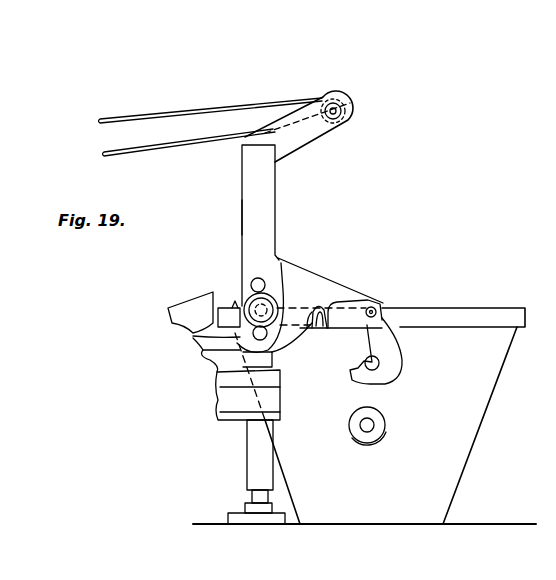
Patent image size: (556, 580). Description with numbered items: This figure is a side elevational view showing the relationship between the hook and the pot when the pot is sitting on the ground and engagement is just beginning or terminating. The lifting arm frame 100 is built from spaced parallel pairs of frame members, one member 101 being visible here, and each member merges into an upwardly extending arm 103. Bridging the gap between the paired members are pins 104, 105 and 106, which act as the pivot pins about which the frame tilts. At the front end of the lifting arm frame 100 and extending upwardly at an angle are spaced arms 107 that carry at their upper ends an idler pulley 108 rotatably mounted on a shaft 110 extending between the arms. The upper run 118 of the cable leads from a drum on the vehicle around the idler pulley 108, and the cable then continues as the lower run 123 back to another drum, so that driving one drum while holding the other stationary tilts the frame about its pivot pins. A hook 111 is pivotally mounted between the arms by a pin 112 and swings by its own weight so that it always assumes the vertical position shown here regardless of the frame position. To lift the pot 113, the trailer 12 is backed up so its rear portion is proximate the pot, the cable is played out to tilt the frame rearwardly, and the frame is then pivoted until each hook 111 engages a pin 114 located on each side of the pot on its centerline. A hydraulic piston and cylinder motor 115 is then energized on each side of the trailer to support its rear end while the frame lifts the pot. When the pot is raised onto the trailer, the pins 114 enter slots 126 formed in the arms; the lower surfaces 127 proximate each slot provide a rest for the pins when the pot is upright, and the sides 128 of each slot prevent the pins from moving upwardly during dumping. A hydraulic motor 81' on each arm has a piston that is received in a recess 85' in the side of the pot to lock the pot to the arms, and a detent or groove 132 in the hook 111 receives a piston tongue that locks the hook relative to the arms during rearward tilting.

The upper run of the cable 118 is at (172, 118).
The lower run of the cable 123 is at (172, 153).
The arms 107 is at (318, 138).
The idler pulley 108 is at (350, 103).
The shaft 110 is at (342, 112).
The lifting arm frame 100 is at (276, 187).
The frame member 101 is at (243, 217).
The pin 104 is at (256, 279).
The hydraulic motor 81' is at (279, 284).
The slot 126 is at (347, 298).
The pin 106 is at (316, 302).
The side of slot 128 is at (322, 326).
The lower surface 127 is at (320, 331).
The upwardly extending arm 103 is at (352, 290).
The pin 112 is at (375, 306).
The hook 111 is at (401, 360).
The pin 114 is at (380, 375).
The detent or groove 132 is at (353, 385).
The recess 85' is at (395, 427).
The pot 113 is at (455, 473).
The pin 105 is at (195, 337).
The trailer 12 is at (223, 396).
The hydraulic piston and cylinder motor 115 is at (253, 459).